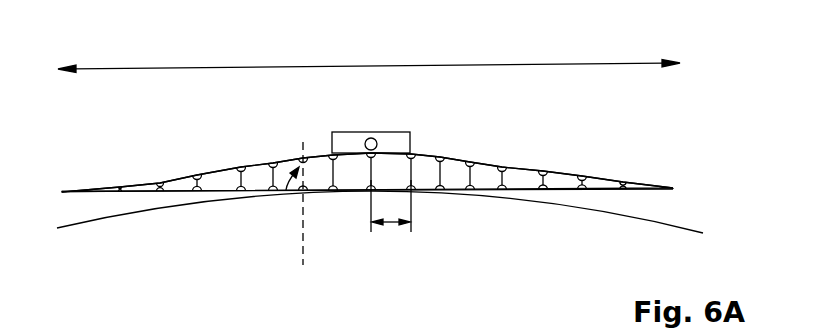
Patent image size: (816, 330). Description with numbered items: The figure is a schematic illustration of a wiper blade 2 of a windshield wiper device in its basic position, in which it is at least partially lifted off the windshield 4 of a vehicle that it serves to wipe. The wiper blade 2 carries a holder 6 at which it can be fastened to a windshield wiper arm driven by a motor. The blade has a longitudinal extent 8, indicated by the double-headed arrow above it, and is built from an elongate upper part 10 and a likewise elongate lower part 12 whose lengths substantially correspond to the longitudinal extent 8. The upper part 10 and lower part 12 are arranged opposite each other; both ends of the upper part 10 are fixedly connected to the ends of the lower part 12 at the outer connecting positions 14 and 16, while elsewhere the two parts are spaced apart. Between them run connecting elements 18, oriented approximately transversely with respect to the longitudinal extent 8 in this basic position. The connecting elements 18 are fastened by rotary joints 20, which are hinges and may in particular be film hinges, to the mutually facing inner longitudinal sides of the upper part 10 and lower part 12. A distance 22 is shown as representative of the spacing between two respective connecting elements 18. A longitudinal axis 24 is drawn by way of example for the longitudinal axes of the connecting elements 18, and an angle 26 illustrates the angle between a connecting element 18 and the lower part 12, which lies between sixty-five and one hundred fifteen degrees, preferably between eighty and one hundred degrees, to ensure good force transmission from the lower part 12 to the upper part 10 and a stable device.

The wiper blade 2 is at (572, 148).
The windshield 4 is at (607, 212).
The holder 6 is at (397, 142).
The longitudinal extent 8 is at (371, 65).
The upper part 10 is at (214, 168).
The lower part 12 is at (528, 191).
The outer connecting position 14 is at (63, 190).
The outer connecting position 16 is at (680, 188).
The connecting element 18 is at (264, 189).
The rotary joint 20 is at (274, 160).
The distance 22 is at (390, 224).
The longitudinal axis 24 is at (303, 260).
The angle 26 is at (285, 191).